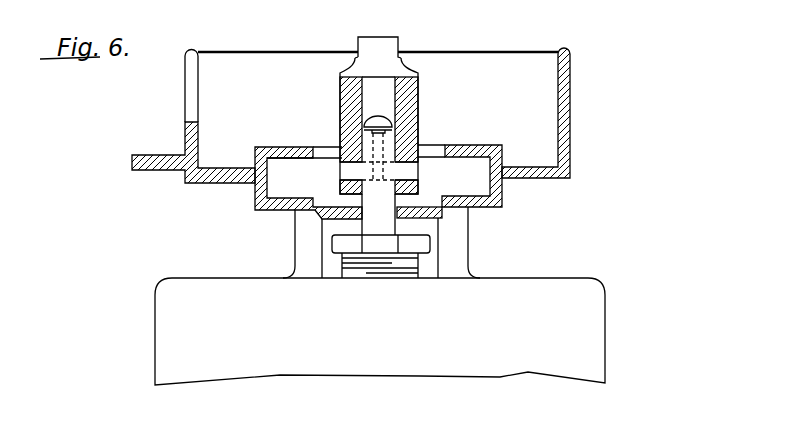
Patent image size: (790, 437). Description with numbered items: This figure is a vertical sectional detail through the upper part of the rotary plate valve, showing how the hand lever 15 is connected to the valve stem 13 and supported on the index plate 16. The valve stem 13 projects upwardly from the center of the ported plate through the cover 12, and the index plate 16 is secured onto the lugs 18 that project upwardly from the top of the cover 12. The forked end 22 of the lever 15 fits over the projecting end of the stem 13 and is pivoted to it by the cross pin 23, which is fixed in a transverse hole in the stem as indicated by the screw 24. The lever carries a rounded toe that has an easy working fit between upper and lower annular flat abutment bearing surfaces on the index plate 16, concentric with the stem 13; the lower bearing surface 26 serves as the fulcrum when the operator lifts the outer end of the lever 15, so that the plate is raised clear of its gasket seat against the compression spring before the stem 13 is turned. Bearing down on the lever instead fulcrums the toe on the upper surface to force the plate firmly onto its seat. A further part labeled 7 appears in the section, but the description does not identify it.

The cover 12 is at (156, 325).
The valve stem 13 is at (370, 223).
The hand lever 15 is at (392, 42).
The index plate 16 is at (566, 145).
The lugs 18 is at (462, 236).
The forked end 22 is at (413, 106).
The cross pin 23 is at (413, 172).
The screw 24 is at (375, 118).
The lower annular flat abutment bearing surface 26 is at (284, 197).
The plate 7 is at (289, 157).